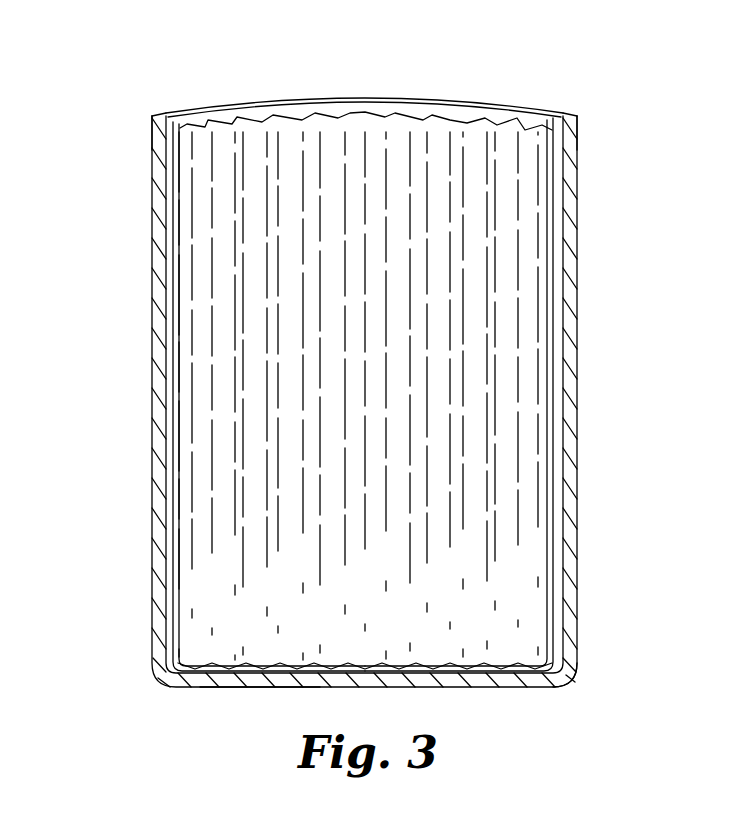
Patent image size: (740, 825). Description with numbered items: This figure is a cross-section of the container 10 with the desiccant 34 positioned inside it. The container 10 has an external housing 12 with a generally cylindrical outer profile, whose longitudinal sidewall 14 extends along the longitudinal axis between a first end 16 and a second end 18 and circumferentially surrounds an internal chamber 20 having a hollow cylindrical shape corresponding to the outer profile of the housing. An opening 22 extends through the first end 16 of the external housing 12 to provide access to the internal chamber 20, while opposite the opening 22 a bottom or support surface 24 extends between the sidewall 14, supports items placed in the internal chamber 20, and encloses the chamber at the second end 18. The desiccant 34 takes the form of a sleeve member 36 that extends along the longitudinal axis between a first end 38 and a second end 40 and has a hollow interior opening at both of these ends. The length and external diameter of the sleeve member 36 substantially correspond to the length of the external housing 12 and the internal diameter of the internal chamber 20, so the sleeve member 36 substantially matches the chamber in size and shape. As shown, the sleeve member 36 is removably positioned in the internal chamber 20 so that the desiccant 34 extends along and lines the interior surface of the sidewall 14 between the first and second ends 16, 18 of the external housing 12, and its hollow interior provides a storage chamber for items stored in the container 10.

The container 10 is at (78, 255).
The external housing 12 is at (150, 405).
The longitudinal sidewall 14 is at (232, 101).
The first end 16 is at (152, 116).
The second end 18 is at (585, 688).
The internal chamber 20 is at (556, 118).
The opening 22 is at (436, 113).
The support surface 24 is at (256, 688).
The desiccant 34 is at (554, 350).
The sleeve member 36 is at (174, 345).
The first end 38 is at (332, 112).
The second end 40 is at (442, 690).